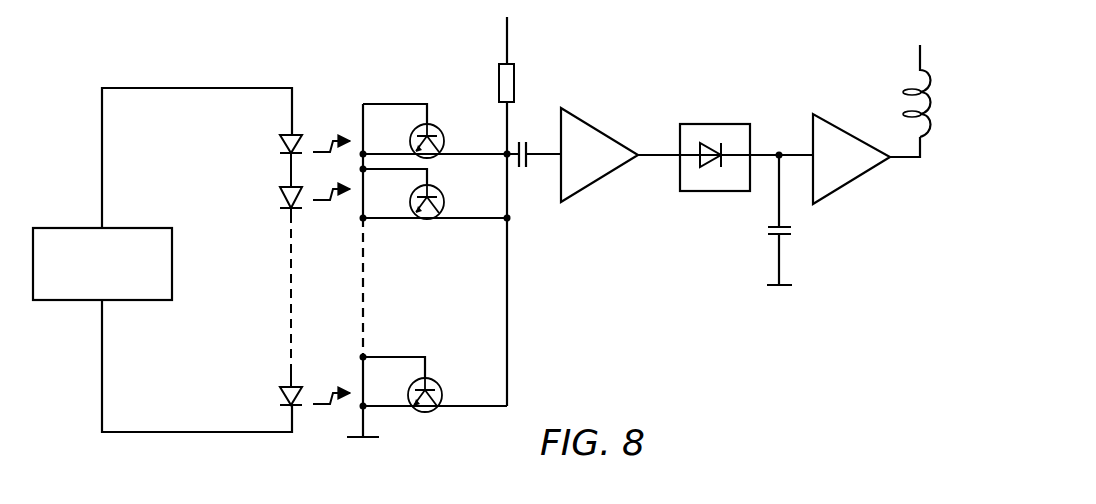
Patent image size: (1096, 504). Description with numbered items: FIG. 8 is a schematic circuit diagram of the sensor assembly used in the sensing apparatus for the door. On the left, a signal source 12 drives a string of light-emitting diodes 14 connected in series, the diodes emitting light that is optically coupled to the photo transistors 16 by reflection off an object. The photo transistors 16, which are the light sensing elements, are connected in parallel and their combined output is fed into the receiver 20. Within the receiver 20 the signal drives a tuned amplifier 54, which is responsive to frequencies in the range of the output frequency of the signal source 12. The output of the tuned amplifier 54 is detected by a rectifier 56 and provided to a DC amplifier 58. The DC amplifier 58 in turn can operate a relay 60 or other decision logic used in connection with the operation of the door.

The signal source 12 is at (159, 227).
The light-emitting diodes 14 is at (275, 160).
The photo transistors 16 is at (451, 128).
The receiver 20 is at (656, 332).
The tuned amplifier 54 is at (596, 127).
The rectifier 56 is at (733, 192).
The DC amplifier 58 is at (856, 142).
The relay 60 is at (930, 75).